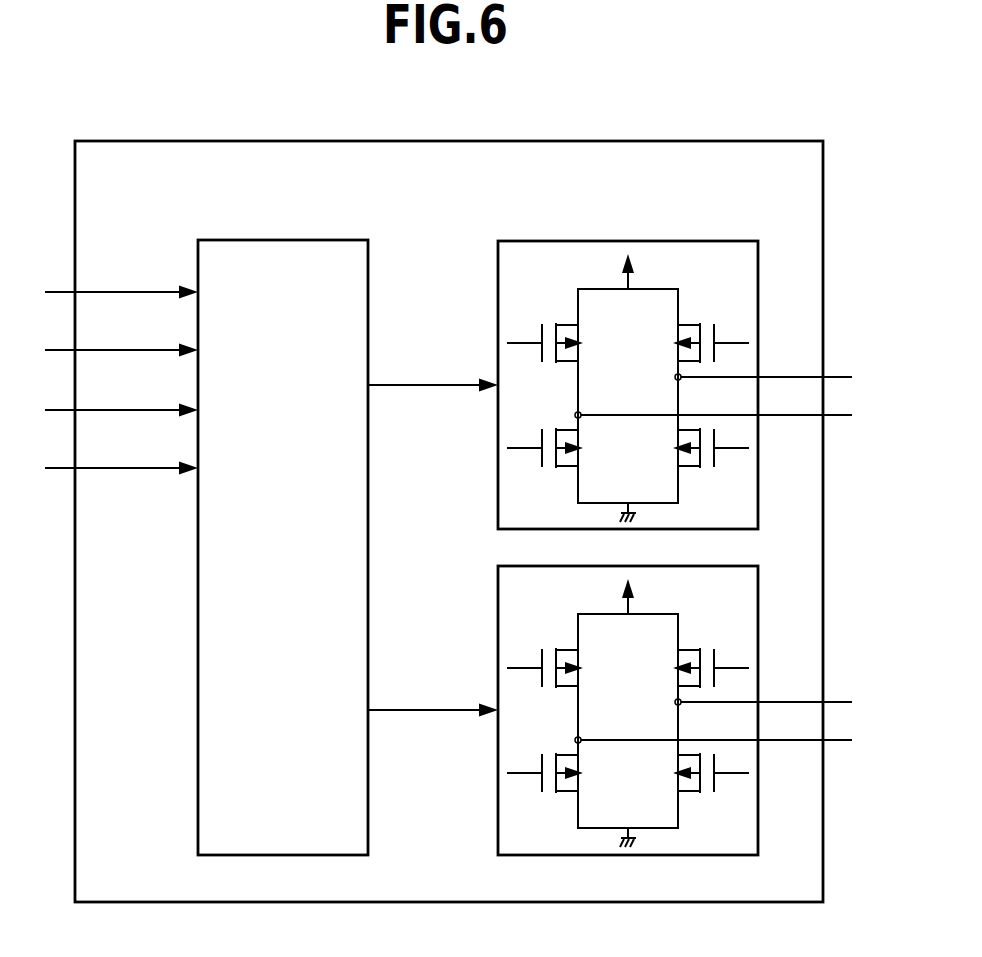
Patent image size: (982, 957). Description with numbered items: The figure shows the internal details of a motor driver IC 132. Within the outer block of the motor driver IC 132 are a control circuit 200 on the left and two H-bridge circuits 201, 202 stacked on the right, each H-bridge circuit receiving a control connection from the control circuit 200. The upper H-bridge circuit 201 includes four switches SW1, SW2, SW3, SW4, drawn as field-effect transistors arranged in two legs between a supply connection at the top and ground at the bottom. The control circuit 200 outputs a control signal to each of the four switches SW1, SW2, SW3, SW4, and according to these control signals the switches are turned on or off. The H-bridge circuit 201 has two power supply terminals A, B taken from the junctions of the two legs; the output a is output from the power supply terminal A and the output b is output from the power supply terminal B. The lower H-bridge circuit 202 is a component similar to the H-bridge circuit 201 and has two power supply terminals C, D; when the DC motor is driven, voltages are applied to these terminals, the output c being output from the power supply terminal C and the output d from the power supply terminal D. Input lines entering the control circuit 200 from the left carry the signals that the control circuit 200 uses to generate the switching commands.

The motor driver IC 132 is at (450, 141).
The control circuit 200 is at (281, 240).
The H-bridge circuit 201 is at (660, 241).
The H-bridge circuit 202 is at (498, 603).
The switch SW1 is at (551, 323).
The switch SW2 is at (551, 468).
The switch SW3 is at (704, 323).
The switch SW4 is at (704, 468).
The power supply terminal A is at (778, 377).
The power supply terminal B is at (727, 415).
The power supply terminal C is at (777, 702).
The power supply terminal D is at (728, 740).